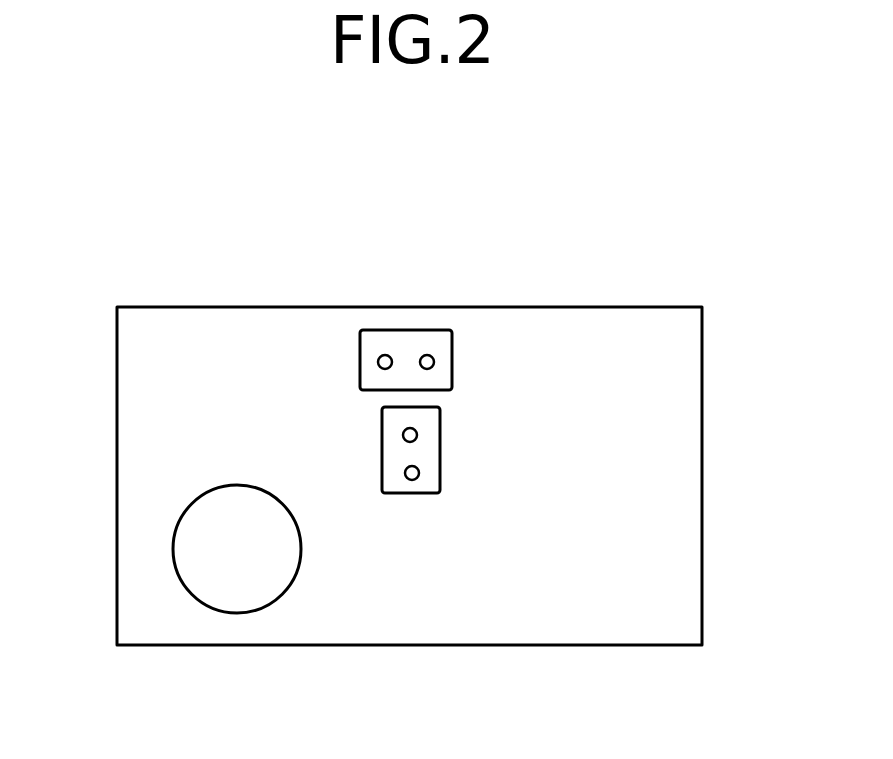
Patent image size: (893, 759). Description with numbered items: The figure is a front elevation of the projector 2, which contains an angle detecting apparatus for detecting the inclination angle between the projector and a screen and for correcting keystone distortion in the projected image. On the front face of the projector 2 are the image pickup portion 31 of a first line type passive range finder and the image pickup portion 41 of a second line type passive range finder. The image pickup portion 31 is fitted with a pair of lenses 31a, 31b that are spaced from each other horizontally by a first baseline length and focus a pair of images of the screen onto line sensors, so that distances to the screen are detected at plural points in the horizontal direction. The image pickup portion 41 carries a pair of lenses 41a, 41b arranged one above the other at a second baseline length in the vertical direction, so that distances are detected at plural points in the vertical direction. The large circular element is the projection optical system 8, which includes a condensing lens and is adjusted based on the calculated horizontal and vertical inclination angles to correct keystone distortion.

The projector 2 is at (702, 590).
The projection optical system 8 is at (173, 543).
The image pickup portion 31 is at (404, 330).
The lens 31a is at (378, 360).
The lens 31b is at (432, 356).
The image pickup portion 41 is at (382, 433).
The lens 41a is at (417, 432).
The lens 41b is at (419, 470).